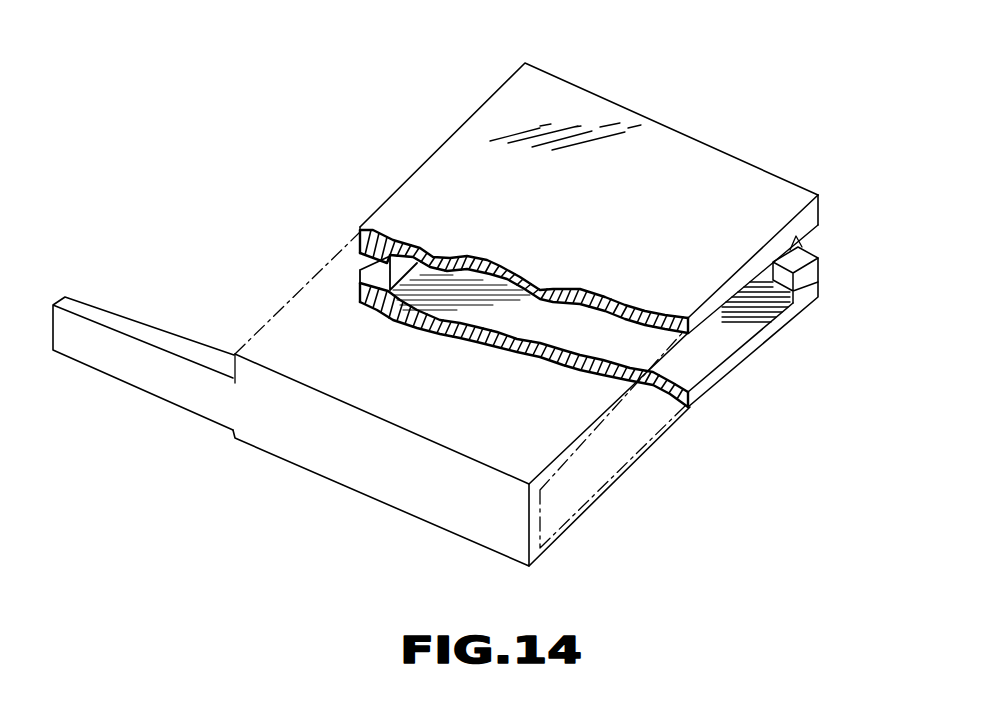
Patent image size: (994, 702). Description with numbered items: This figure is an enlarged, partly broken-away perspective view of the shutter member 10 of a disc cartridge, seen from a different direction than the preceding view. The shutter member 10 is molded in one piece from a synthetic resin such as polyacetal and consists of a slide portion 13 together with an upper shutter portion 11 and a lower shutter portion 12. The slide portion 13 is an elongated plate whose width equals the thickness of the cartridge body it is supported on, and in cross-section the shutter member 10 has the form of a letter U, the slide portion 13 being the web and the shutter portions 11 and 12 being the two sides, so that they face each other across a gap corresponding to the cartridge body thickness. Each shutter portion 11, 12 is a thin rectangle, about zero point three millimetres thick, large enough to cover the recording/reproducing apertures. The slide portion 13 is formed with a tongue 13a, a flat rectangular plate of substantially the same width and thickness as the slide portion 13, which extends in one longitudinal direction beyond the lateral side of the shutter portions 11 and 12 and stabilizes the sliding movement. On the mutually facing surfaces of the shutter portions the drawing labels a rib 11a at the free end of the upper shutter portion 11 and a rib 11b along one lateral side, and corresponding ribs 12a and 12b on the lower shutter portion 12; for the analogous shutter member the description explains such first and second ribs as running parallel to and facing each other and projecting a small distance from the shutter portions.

The shutter member 10 is at (692, 412).
The upper shutter portion 11 is at (663, 147).
The upper plate corner tab 11a is at (818, 222).
The upper plate notch 11b is at (358, 234).
The lower shutter portion 12 is at (723, 331).
The intermediate plate corner projection 12a is at (809, 277).
The intermediate plate projection 12b is at (358, 291).
The slide portion 13 is at (377, 478).
The tongue 13a is at (133, 375).